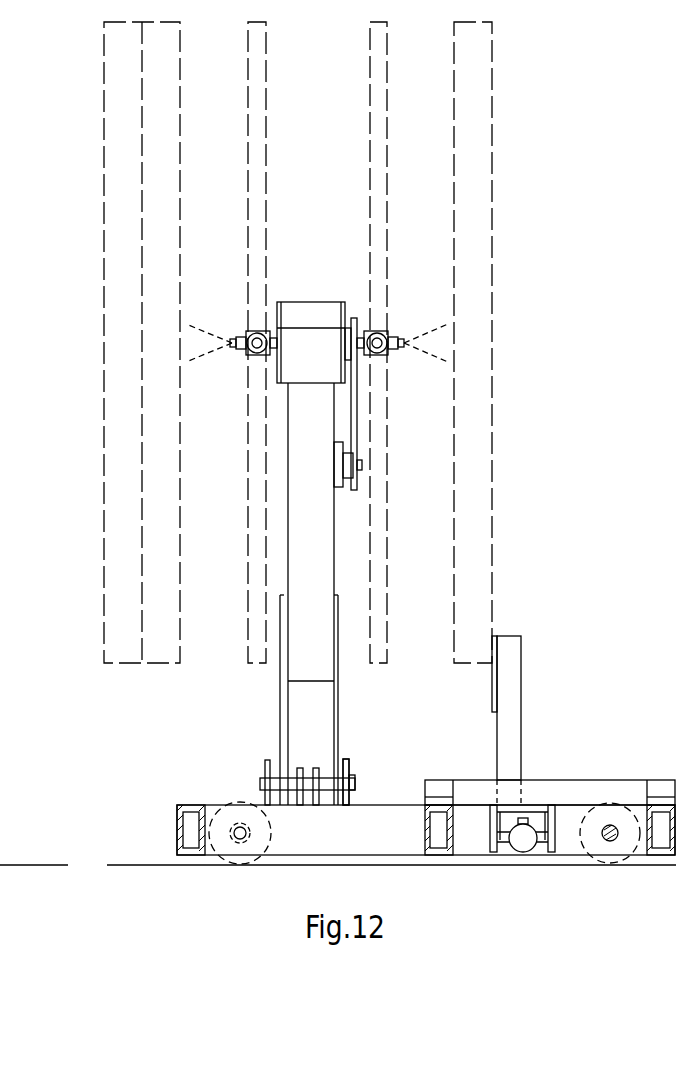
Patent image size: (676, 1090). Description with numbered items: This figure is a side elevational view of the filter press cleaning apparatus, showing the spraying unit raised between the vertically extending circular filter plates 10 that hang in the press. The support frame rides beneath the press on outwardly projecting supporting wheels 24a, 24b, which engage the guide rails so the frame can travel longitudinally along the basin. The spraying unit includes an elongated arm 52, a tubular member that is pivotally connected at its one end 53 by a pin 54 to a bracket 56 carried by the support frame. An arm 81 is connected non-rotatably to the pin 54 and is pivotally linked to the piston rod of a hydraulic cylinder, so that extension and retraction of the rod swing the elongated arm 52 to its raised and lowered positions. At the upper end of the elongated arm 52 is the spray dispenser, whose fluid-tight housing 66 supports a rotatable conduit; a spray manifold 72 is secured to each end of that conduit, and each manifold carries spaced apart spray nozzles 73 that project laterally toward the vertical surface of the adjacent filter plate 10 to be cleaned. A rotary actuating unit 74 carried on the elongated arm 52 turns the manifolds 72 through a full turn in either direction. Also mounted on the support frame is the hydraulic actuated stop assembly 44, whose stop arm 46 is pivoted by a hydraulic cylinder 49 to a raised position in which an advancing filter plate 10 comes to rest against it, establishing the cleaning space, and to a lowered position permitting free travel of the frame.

The filter plate 10 is at (104, 203).
The housing 66 is at (308, 315).
The spray manifold 72 is at (258, 330).
The spray nozzle 73 is at (236, 345).
The rotary actuating unit 74 is at (360, 437).
The elongated arm 52 is at (297, 542).
The end 53 is at (283, 713).
The arm 81 is at (300, 775).
The bracket 56 is at (348, 762).
The pin 54 is at (357, 784).
The supporting wheel 24b is at (222, 818).
The supporting wheel 24a is at (621, 861).
The hydraulic cylinder 49 is at (523, 840).
The stop assembly 44 is at (512, 650).
The stop arm 46 is at (510, 710).